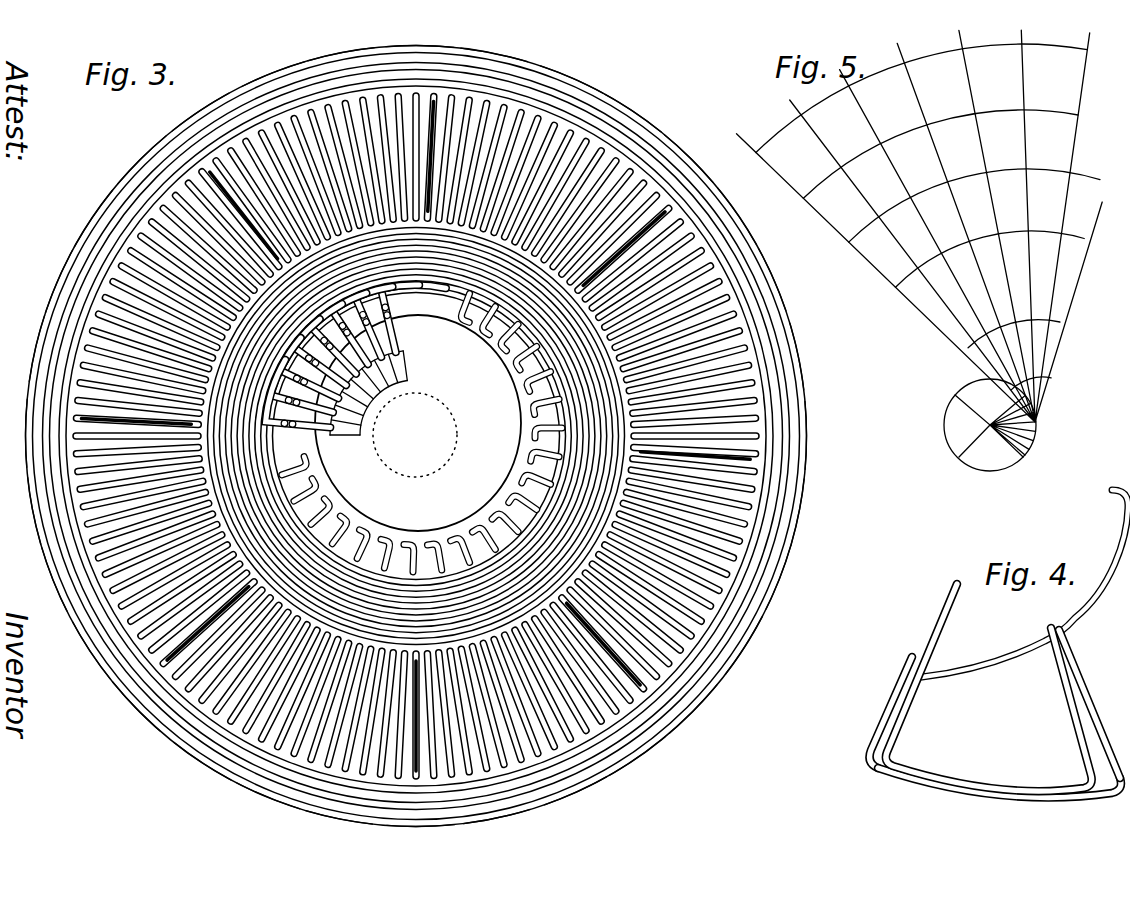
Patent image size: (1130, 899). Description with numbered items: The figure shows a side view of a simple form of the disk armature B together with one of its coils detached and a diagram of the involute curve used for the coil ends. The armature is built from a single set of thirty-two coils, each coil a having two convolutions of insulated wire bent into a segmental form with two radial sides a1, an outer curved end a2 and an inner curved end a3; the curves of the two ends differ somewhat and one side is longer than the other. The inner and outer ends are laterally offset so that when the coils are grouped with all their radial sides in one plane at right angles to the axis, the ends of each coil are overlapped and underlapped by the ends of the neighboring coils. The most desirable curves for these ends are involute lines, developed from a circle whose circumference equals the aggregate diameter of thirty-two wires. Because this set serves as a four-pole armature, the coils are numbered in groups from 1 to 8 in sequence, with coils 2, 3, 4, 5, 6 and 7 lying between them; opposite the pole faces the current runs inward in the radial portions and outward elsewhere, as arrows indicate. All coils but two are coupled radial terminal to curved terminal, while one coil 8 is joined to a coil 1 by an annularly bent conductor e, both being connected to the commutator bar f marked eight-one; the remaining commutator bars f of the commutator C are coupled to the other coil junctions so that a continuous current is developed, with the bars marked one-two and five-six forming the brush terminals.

In FIG. 3, the coil number 1 is at (414, 435).
In FIG. 3, the coil number 2 is at (414, 434).
In FIG. 3, the coil number 3 is at (413, 433).
In FIG. 3, the coil number 4 is at (415, 435).
In FIG. 3, the coil number 5 is at (416, 435).
In FIG. 3, the coil number 6 is at (413, 435).
In FIG. 3, the coil number 7 is at (414, 434).
In FIG. 3, the coil number 8 is at (415, 436).
In FIG. 3, the disk armature B is at (374, 384).
In FIG. 3, the coil a is at (805, 447).
In FIG. 4, the coil a is at (1004, 687).
In FIG. 3, the commutator C is at (393, 414).
In FIG. 3, the annularly bent conductor e is at (420, 433).
In FIG. 3, the commutator bars f is at (361, 364).
In FIG. 4, the radial sides a1 is at (880, 712).
In FIG. 4, the outer curved end a2 is at (999, 797).
In FIG. 4, the inner curved end a3 is at (1025, 583).